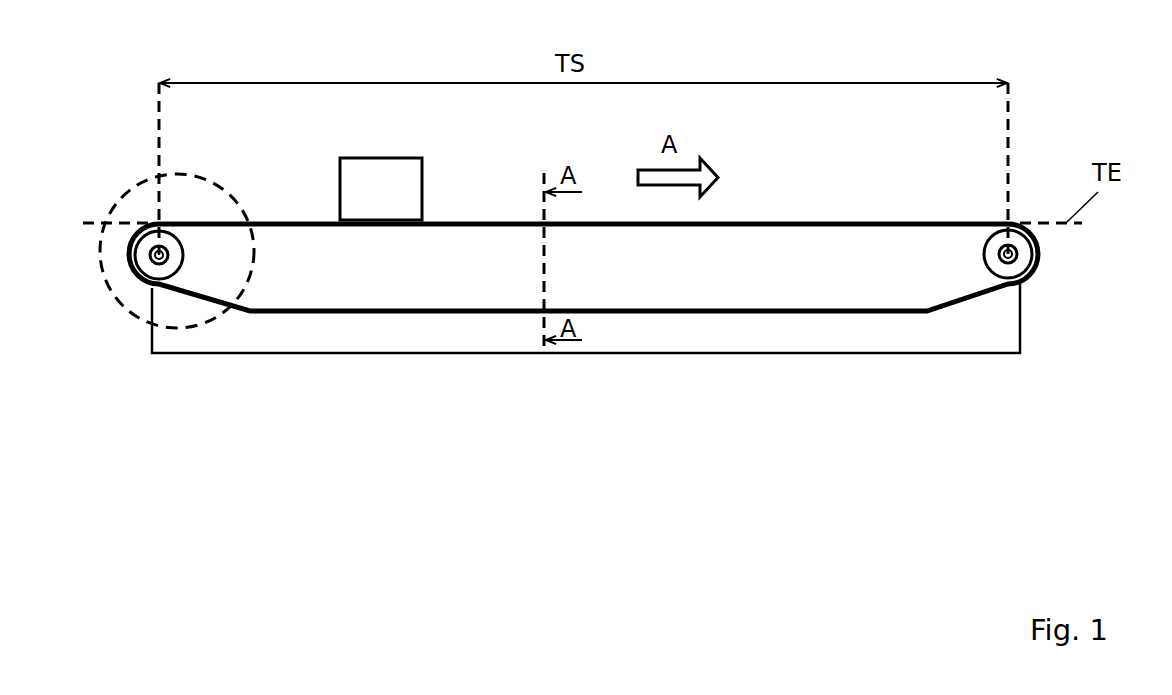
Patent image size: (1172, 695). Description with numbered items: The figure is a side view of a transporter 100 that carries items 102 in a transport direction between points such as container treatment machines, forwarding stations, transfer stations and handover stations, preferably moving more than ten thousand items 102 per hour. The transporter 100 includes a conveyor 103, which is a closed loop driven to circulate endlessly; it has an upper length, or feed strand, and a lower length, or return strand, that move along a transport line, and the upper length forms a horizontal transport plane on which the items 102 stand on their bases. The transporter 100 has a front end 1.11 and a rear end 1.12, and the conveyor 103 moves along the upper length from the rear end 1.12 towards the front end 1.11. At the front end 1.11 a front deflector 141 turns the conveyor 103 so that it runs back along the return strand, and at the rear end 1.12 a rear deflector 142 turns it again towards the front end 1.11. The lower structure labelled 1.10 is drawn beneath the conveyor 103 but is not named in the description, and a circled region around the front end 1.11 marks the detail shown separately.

The transporter 100 is at (115, 75).
The items 102 is at (355, 157).
The conveyor 103 is at (887, 213).
The front deflector 141 is at (143, 256).
The rear deflector 142 is at (1023, 258).
The frame 1.10 is at (177, 355).
The front end 1.11 is at (95, 287).
The rear end 1.12 is at (1057, 282).